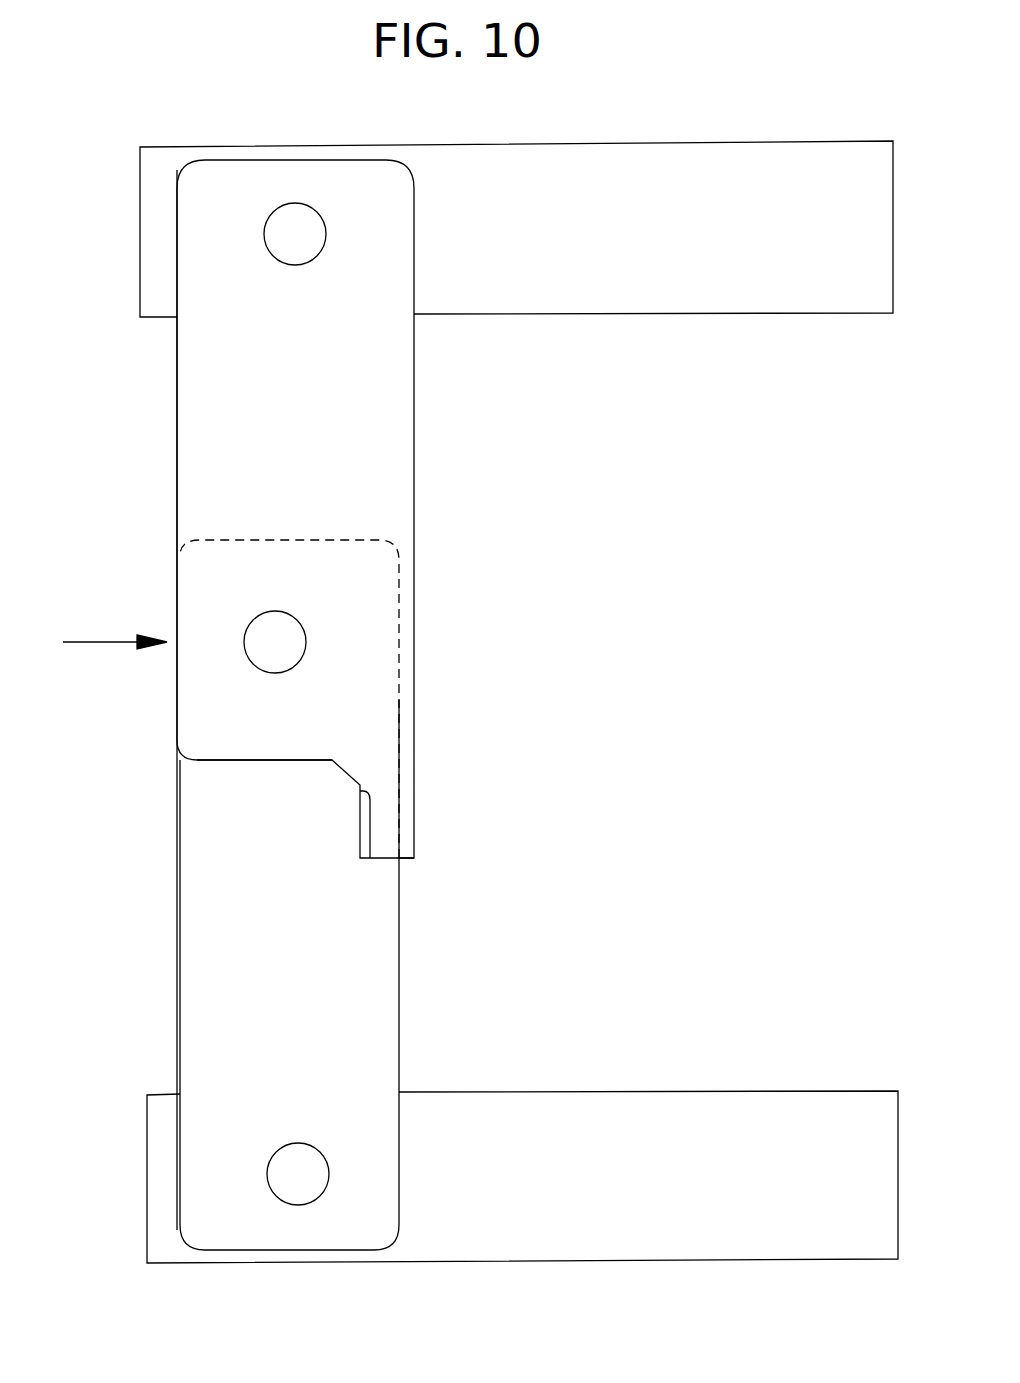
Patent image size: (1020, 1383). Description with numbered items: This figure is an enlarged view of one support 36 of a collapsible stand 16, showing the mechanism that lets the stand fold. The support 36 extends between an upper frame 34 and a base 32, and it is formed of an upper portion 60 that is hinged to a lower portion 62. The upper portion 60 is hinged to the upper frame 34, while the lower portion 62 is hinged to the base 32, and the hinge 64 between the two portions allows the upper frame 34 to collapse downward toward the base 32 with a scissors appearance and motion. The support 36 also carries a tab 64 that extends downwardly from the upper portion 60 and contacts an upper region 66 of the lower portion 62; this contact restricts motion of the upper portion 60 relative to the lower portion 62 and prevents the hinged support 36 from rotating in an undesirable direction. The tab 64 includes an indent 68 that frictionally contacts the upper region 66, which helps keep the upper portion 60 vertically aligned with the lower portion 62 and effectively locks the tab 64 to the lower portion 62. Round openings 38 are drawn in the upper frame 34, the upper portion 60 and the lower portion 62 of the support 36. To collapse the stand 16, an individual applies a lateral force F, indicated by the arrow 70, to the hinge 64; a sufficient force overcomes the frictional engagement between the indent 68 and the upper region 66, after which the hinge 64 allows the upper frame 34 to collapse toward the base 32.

The stand 16 is at (150, 131).
The base 32 is at (698, 1220).
The upper frame 34 is at (740, 160).
The support 36 is at (196, 443).
The mounting hole 38 is at (295, 234).
The upper portion 60 is at (196, 353).
The lower portion 62 is at (192, 907).
The hinge 64 is at (270, 645).
The upper region 66 is at (347, 822).
The indent 68 is at (365, 838).
The lateral force F 70 is at (83, 640).